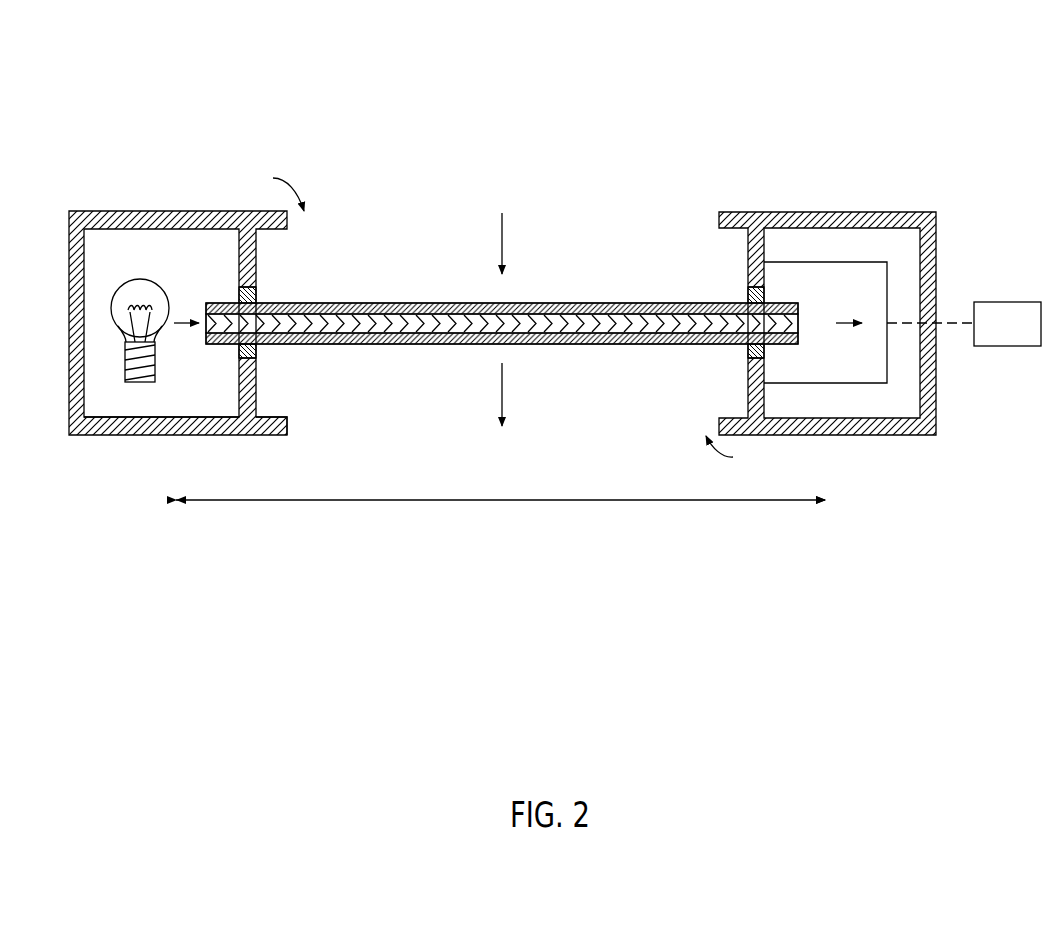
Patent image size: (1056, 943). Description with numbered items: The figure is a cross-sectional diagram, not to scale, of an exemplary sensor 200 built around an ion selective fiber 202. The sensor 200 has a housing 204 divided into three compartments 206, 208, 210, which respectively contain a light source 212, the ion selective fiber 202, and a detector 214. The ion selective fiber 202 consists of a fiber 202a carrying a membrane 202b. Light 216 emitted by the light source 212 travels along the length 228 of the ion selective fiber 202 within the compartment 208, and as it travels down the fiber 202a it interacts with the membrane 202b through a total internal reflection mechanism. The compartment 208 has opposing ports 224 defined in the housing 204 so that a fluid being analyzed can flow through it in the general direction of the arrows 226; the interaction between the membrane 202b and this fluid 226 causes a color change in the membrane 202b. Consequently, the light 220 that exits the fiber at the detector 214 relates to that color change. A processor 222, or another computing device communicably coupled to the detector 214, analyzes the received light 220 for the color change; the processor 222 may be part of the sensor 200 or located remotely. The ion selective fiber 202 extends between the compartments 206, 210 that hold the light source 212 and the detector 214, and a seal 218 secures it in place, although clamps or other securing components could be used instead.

The sensor 200 is at (138, 82).
The ion selective fiber 202 is at (437, 284).
The fiber 202a is at (595, 330).
The membrane 202b is at (655, 340).
The housing 204 is at (121, 211).
The compartment 206 is at (107, 410).
The compartment 208 is at (272, 408).
The compartment 210 is at (896, 400).
The light source 212 is at (158, 287).
The detector 214 is at (855, 298).
The light 216 is at (181, 324).
The seal 218 is at (260, 352).
The light 220 is at (836, 324).
The processor 222 is at (1027, 337).
The ports 224 is at (507, 317).
The arrows 226 is at (503, 240).
The length 228 is at (415, 498).